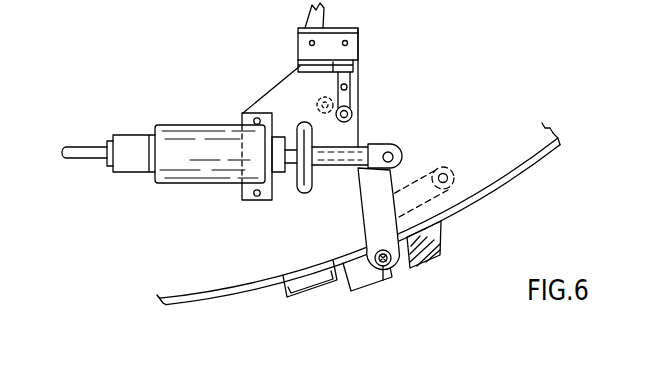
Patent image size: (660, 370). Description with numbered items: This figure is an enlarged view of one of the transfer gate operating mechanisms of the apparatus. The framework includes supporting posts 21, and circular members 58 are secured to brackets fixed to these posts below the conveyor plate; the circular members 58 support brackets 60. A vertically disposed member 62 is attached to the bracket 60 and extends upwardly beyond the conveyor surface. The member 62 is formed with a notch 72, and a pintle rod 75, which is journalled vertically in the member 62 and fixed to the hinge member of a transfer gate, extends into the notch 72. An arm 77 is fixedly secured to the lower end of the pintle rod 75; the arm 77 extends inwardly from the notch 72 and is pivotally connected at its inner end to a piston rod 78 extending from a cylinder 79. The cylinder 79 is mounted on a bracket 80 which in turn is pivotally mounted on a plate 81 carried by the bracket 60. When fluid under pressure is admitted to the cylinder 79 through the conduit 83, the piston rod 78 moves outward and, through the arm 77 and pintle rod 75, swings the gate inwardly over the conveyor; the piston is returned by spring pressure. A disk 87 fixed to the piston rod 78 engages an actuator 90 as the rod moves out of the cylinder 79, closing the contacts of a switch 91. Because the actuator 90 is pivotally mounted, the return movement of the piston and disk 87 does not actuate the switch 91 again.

The supporting post 21 is at (297, 298).
The circular member 58 is at (236, 293).
The bracket 60 is at (318, 18).
The vertically disposed member 62 is at (442, 250).
The notch 72 is at (394, 277).
The pintle rod 75 is at (401, 258).
The arm 77 is at (363, 209).
The piston rod 78 is at (357, 150).
The cylinder 79 is at (188, 137).
The bracket 80 is at (292, 186).
The plate 81 is at (283, 90).
The conduit 83 is at (87, 143).
The disk 87 is at (303, 181).
The actuator 90 is at (348, 97).
The switch 91 is at (352, 42).